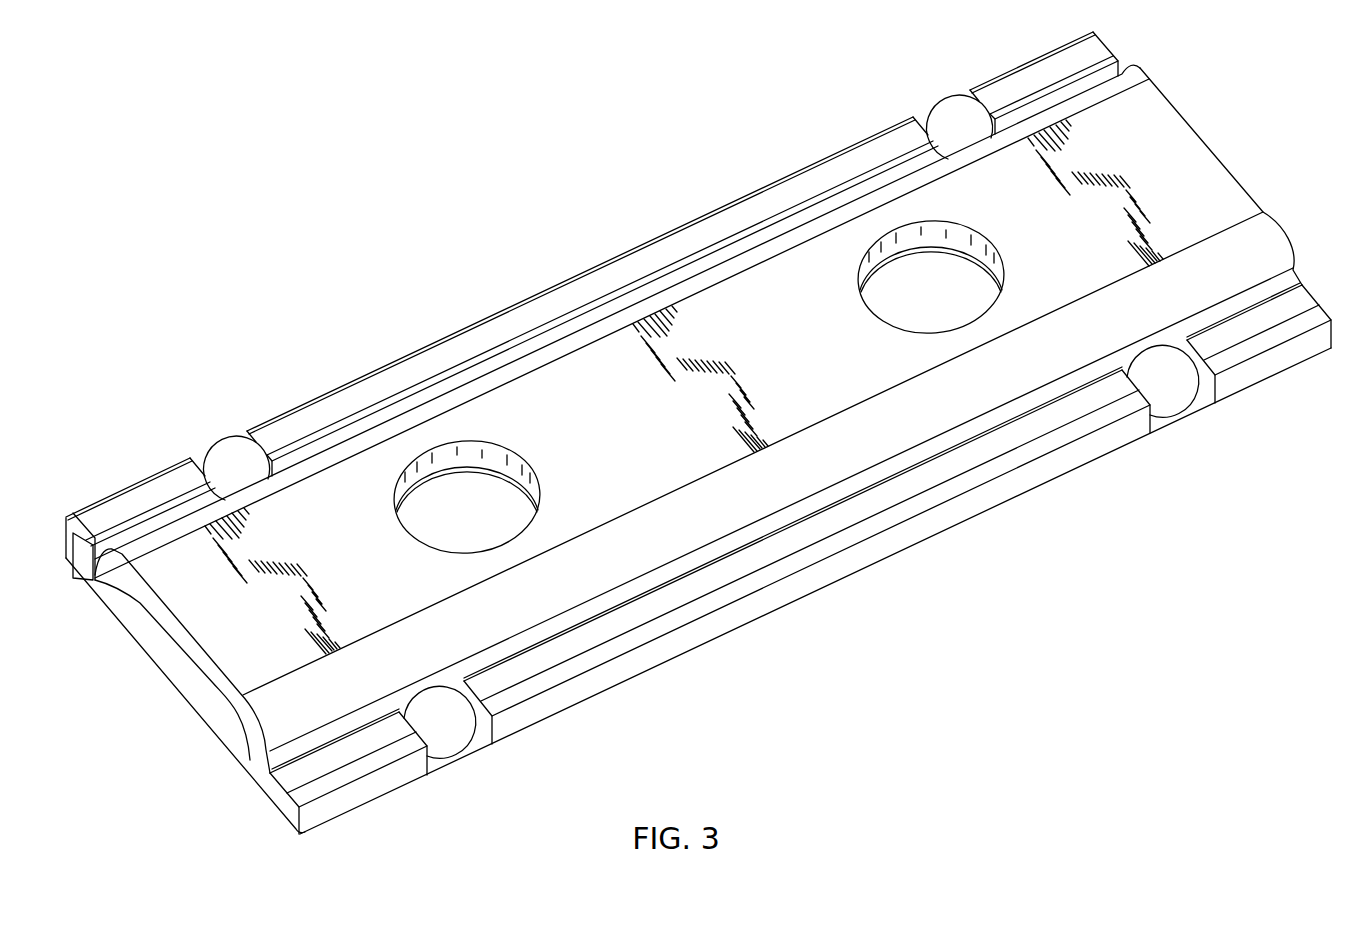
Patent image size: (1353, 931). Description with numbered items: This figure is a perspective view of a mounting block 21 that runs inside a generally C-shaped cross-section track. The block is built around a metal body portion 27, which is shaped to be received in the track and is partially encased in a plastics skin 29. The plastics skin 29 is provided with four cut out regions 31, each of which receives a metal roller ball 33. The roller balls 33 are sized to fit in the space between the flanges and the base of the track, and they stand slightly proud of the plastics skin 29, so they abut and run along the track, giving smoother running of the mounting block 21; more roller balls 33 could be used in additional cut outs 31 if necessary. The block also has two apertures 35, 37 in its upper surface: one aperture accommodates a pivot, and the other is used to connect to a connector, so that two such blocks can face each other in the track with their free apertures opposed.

The mounting block 21 is at (1203, 556).
The metal body portion 27 is at (1226, 181).
The plastics skin 29 is at (920, 532).
The cut out regions 31 is at (962, 97).
The roller balls 33 is at (1178, 411).
The aperture 35 is at (944, 290).
The aperture 37 is at (480, 513).